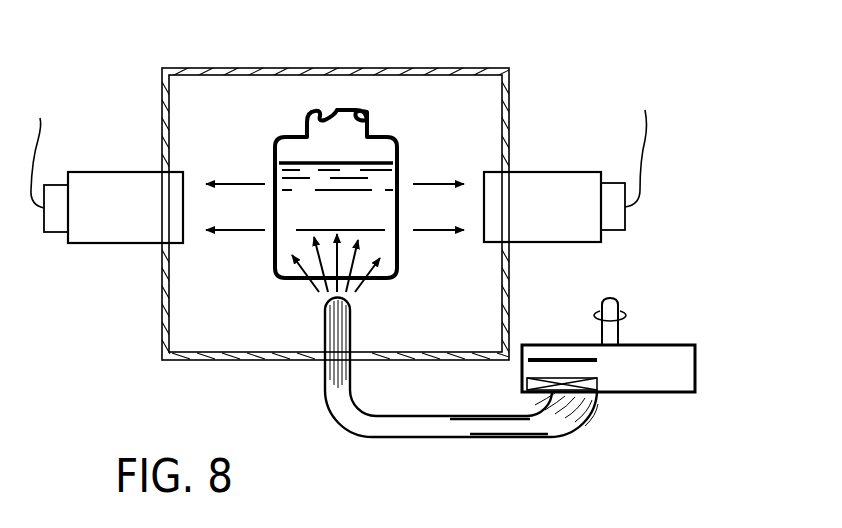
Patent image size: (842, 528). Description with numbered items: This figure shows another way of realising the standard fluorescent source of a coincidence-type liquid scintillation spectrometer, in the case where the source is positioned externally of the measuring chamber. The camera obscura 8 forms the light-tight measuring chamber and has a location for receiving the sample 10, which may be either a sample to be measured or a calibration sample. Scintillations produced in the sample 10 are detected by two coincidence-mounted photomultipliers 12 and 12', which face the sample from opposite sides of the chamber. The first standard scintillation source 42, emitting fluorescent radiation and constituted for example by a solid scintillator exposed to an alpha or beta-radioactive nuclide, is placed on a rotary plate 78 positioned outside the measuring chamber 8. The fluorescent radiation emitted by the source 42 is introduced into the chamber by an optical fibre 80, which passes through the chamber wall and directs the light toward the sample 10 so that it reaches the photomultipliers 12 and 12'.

The camera obscura 8 is at (365, 68).
The sample 10 is at (396, 162).
The photomultiplier 12 is at (148, 171).
The photomultiplier 12' is at (530, 171).
The first standard scintillation source 42 is at (597, 383).
The rotary plate 78 is at (665, 345).
The optical fibre 80 is at (333, 383).